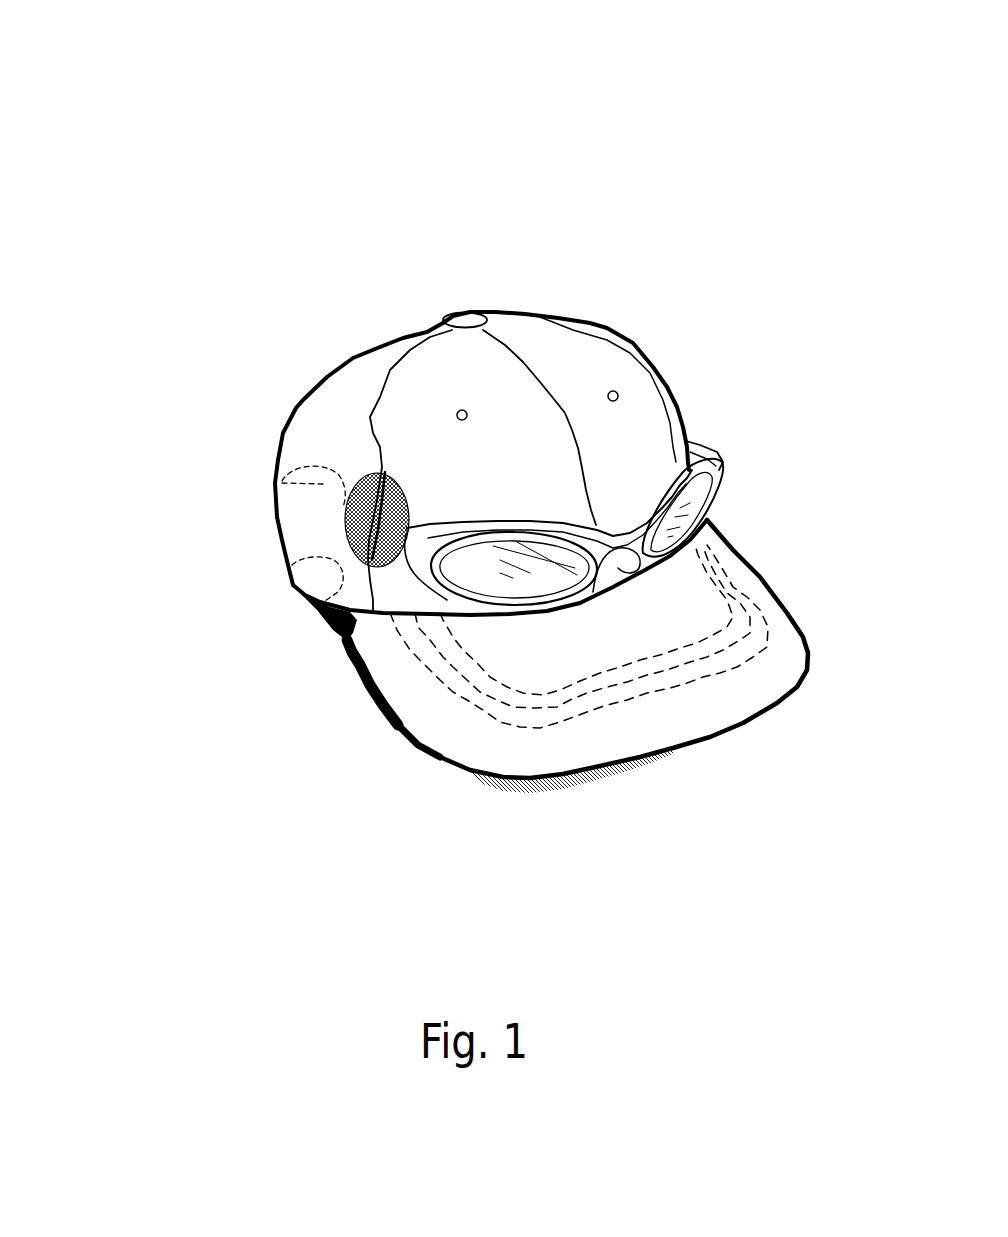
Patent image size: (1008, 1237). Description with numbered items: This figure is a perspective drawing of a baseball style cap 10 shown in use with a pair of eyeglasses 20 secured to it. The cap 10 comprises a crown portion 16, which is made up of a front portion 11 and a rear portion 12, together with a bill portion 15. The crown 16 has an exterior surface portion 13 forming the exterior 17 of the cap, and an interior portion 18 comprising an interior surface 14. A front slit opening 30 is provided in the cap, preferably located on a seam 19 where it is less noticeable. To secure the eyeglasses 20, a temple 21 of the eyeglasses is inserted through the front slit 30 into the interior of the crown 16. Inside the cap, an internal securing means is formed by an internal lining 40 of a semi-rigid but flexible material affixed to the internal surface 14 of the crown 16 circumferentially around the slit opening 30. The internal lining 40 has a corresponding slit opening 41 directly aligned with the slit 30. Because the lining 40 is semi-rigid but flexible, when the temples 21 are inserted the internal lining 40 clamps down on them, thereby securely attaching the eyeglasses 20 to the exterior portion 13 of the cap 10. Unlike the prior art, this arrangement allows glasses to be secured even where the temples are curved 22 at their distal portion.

The baseball style cap 10 is at (549, 312).
The front portion 11 is at (692, 389).
The rear portion 12 is at (382, 426).
The exterior surface portion 13 is at (646, 371).
The interior surface 14 is at (424, 568).
The bill portion 15 is at (584, 656).
The crown portion 16 is at (188, 551).
The exterior 17 is at (245, 432).
The interior portion 18 is at (232, 580).
The seam 19 is at (289, 329).
The eyeglasses 20 is at (436, 658).
The temple 21 is at (194, 490).
The curved temples 22 is at (210, 462).
The front slit opening 30 is at (241, 561).
The internal lining 40 is at (440, 287).
The corresponding slit opening 41 is at (479, 306).